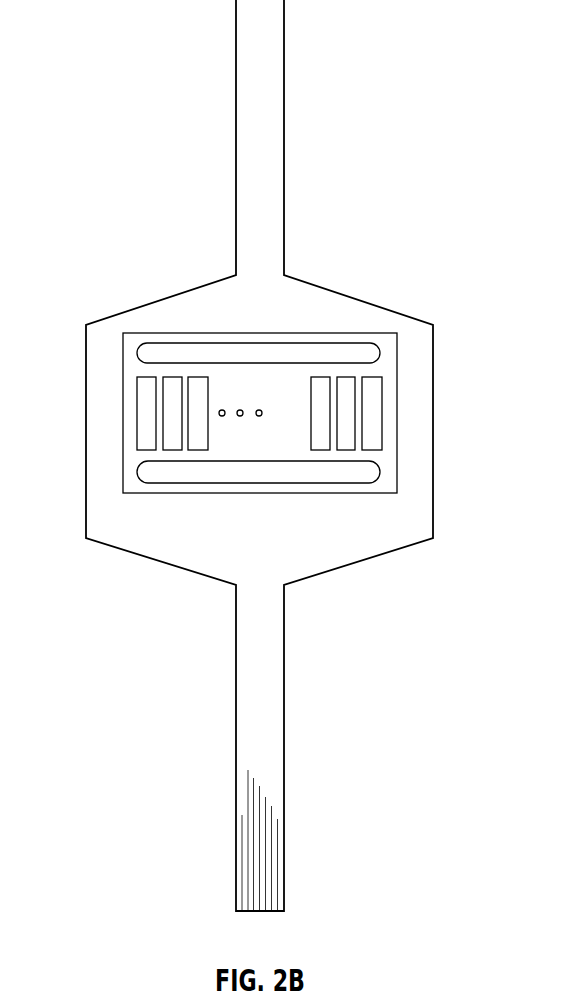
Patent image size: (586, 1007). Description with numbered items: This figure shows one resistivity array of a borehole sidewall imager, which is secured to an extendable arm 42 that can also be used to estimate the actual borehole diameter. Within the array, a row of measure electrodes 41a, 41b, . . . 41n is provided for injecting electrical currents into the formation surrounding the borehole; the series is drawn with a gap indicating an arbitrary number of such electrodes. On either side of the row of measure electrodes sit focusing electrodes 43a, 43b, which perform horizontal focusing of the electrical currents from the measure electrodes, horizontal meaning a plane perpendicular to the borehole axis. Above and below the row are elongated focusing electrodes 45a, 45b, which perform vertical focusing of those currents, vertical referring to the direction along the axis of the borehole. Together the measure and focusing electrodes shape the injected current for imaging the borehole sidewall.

The extendable arm 42 is at (284, 162).
The measure electrode 41a is at (176, 396).
The measure electrode 41b is at (197, 433).
The measure electrode 41n is at (343, 396).
The focusing electrode 43a is at (146, 405).
The focusing electrode 43b is at (375, 406).
The focusing electrode 45a is at (212, 352).
The focusing electrode 45b is at (375, 473).